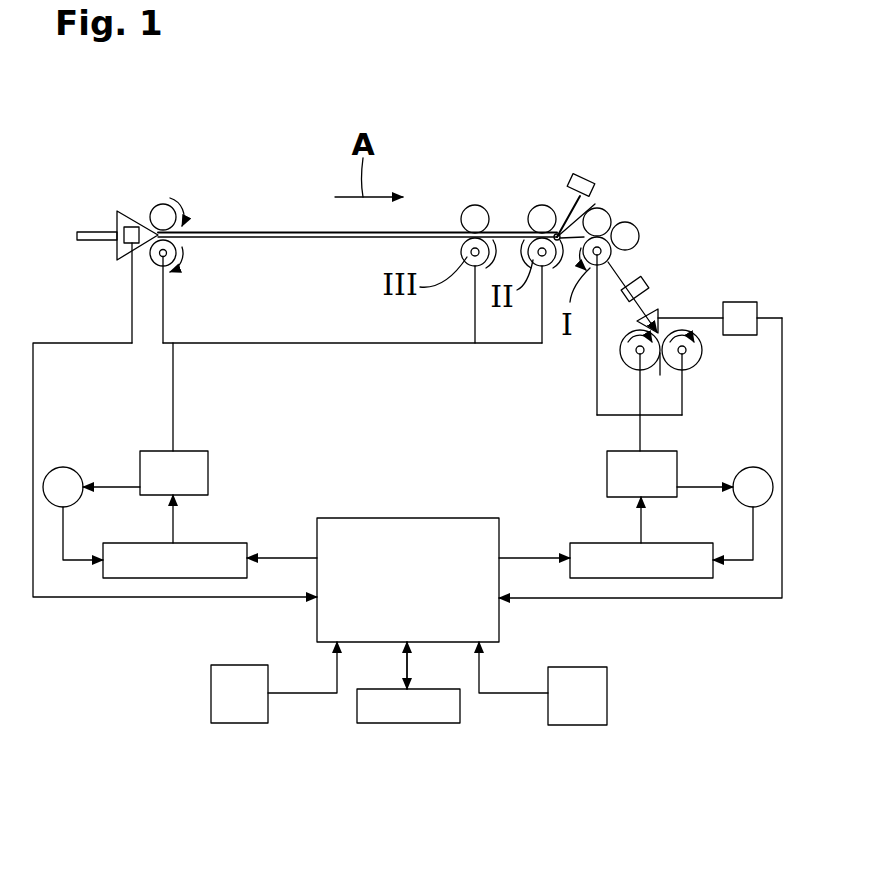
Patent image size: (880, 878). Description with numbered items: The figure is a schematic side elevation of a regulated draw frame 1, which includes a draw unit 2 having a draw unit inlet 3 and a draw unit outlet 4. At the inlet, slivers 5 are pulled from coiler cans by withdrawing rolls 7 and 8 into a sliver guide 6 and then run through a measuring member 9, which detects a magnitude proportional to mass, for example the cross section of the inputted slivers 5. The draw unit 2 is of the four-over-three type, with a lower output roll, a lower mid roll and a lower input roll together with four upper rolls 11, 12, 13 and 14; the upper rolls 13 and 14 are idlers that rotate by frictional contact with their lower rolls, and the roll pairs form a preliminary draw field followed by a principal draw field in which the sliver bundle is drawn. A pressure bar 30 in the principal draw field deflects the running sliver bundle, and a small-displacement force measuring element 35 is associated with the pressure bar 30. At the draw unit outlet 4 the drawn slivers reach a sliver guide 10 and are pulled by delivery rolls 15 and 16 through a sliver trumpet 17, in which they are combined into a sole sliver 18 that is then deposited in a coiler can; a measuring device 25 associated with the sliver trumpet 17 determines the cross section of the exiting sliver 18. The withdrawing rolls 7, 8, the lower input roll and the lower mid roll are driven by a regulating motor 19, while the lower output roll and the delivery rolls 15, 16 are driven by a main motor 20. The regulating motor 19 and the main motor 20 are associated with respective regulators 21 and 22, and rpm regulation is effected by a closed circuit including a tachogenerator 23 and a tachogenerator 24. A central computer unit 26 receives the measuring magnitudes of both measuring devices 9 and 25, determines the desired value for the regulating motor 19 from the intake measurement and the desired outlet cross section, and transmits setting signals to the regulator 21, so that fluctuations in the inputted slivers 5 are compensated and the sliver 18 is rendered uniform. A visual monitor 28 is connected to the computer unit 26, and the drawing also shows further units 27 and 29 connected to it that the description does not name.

The draw frame 1 is at (427, 165).
The draw unit 2 is at (678, 175).
The draw unit inlet 3 is at (82, 172).
The draw unit outlet 4 is at (682, 288).
The slivers 5 is at (90, 233).
The sliver guide 6 is at (134, 222).
The withdrawing roll 7 is at (160, 213).
The withdrawing roll 8 is at (157, 260).
The measuring member 9 is at (125, 225).
The sliver guide 10 is at (640, 290).
The upper roll 11 is at (628, 237).
The upper roll 12 is at (600, 219).
The upper roll 13 is at (542, 217).
The upper roll 14 is at (475, 217).
The delivery roll 15 is at (620, 363).
The delivery roll 16 is at (687, 357).
The sliver trumpet 17 is at (665, 308).
The sliver 18 is at (661, 373).
The regulating motor 19 is at (183, 463).
The main motor 20 is at (620, 477).
The regulator 21 is at (210, 553).
The regulator 22 is at (600, 557).
The tachogenerator 23 is at (63, 477).
The tachogenerator 24 is at (748, 475).
The measuring device 25 is at (740, 318).
The central computer unit 26 is at (405, 543).
The input unit 27 is at (227, 692).
The visual monitor 28 is at (408, 710).
The input unit 29 is at (590, 692).
The pressure bar 30 is at (594, 203).
The force measuring element 35 is at (581, 172).